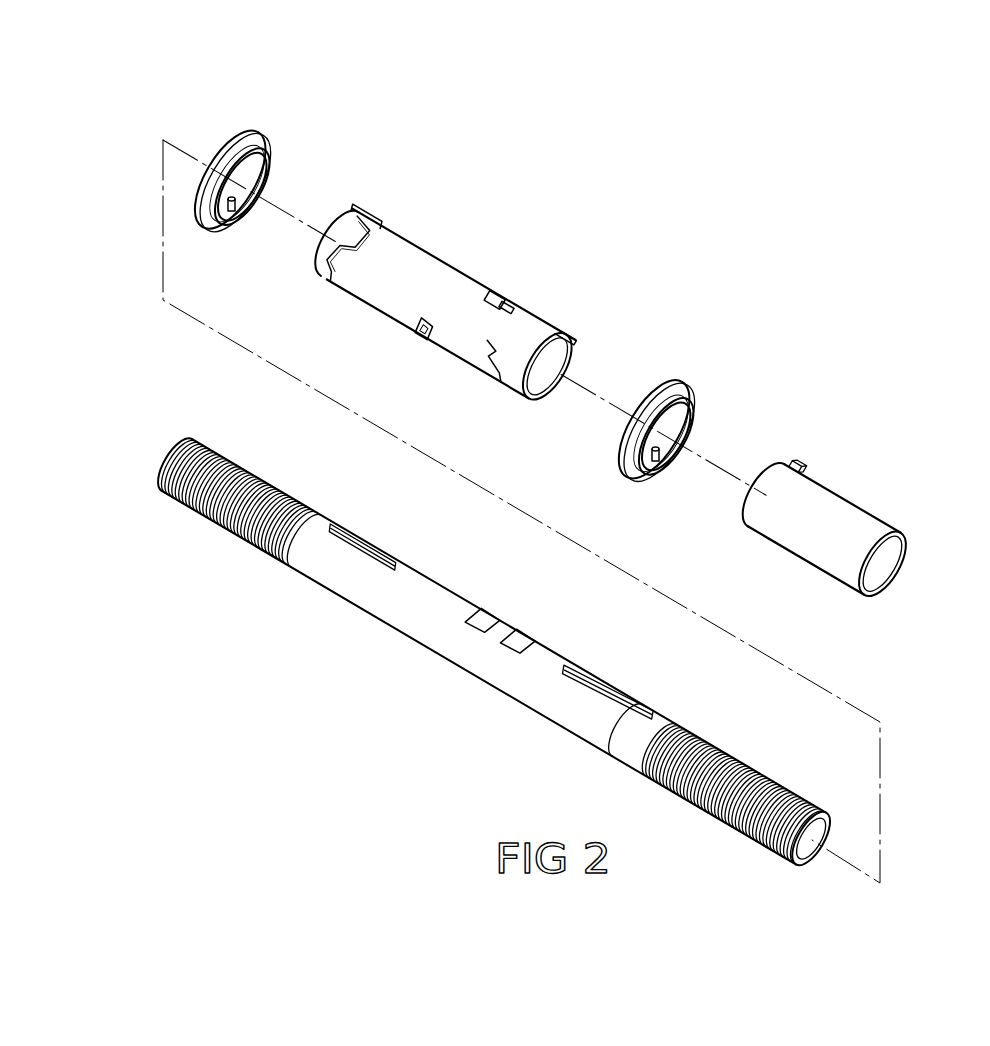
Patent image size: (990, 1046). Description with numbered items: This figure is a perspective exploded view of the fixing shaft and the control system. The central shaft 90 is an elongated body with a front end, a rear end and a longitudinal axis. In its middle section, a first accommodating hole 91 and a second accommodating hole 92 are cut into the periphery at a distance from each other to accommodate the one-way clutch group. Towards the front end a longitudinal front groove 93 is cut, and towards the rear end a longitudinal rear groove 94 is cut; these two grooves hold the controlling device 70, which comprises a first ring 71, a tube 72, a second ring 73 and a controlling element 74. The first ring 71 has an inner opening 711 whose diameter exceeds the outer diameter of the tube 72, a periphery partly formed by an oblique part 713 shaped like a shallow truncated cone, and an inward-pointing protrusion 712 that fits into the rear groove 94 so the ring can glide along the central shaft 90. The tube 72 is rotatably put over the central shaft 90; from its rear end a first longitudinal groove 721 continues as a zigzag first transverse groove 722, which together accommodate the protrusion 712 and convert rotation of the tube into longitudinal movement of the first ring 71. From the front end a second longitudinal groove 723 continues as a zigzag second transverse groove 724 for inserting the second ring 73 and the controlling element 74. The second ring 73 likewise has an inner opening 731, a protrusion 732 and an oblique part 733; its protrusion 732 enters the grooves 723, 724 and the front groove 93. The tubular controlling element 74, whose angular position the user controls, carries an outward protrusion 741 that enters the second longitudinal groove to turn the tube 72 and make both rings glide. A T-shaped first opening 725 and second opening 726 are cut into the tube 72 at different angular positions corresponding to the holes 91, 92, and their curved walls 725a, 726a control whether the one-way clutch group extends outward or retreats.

The controlling device 70 is at (873, 612).
The first ring 71 is at (222, 140).
The inner opening 711 is at (263, 167).
The protrusion 712 is at (236, 213).
The oblique part 713 is at (243, 136).
The tube 72 is at (392, 237).
The first longitudinal groove 721 is at (350, 210).
The first transverse groove 722 is at (347, 277).
The second longitudinal groove 723 is at (533, 317).
The second transverse groove 724 is at (487, 372).
The first opening 725 is at (488, 290).
The curved wall 725a is at (503, 297).
The second opening 726 is at (427, 333).
The curved wall 726a is at (432, 323).
The second ring 73 is at (660, 377).
The inner opening 731 is at (687, 417).
The protrusion 732 is at (657, 467).
The oblique part 733 is at (625, 453).
The controlling element 74 is at (863, 523).
The protrusion 741 is at (793, 463).
The central shaft 90 is at (343, 612).
The first accommodating hole 91 is at (532, 632).
The second accommodating hole 92 is at (468, 603).
The front groove 93 is at (623, 692).
The rear groove 94 is at (350, 537).